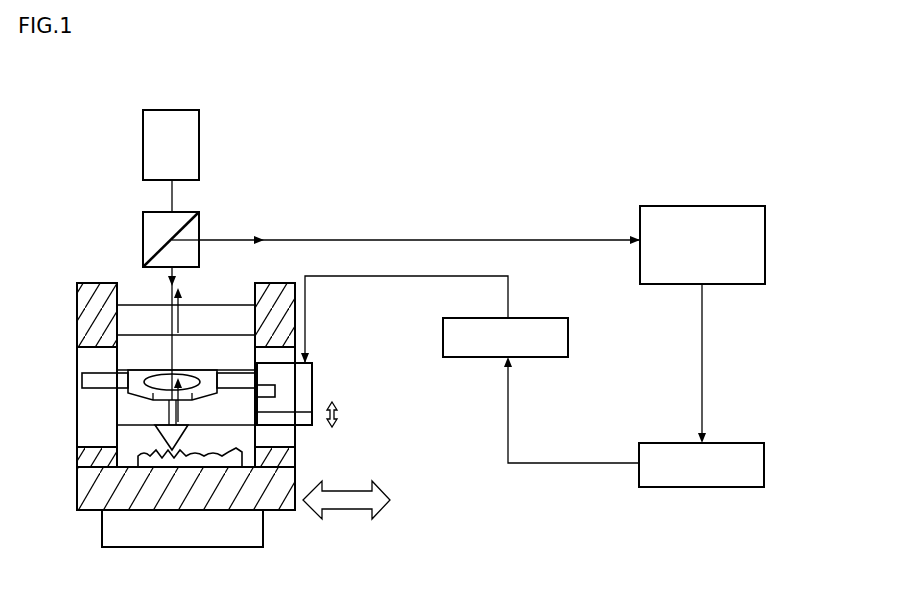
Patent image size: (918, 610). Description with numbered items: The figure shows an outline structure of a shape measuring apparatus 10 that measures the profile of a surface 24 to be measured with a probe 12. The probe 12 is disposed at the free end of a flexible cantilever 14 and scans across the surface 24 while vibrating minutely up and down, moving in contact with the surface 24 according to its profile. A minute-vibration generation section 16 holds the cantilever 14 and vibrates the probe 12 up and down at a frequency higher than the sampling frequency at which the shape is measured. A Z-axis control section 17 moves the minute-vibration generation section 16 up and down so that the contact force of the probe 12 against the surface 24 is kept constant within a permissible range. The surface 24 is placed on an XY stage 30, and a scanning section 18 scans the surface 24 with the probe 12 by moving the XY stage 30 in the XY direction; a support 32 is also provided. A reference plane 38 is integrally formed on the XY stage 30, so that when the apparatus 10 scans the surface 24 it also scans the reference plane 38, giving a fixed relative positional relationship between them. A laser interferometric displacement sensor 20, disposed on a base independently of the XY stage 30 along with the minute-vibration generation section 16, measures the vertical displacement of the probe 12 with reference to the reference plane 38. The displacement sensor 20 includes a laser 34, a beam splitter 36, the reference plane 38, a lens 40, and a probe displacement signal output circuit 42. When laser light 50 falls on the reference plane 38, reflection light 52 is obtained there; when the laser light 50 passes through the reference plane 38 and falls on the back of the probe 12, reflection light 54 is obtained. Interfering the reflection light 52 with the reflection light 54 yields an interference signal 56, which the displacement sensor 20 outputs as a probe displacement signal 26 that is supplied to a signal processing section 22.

The shape measuring apparatus 10 is at (566, 124).
The probe 12 is at (158, 434).
The flexible cantilever 14 is at (167, 425).
The minute-vibration generation section 16 is at (308, 400).
The Z-axis control section 17 is at (538, 319).
The scanning section 18 is at (172, 548).
The displacement sensor 20 is at (249, 191).
The signal processing section 22 is at (736, 444).
The surface to be measured 24 is at (157, 452).
The probe displacement signal 26 is at (702, 353).
The XY stage 30 is at (82, 481).
The support 32 is at (297, 437).
The laser 34 is at (143, 148).
The beam splitter 36 is at (143, 228).
The reference plane 38 is at (133, 323).
The lens 40 is at (152, 372).
The probe displacement signal output circuit 42 is at (734, 207).
The laser light 50 is at (172, 195).
The reflection light 52 is at (178, 333).
The reflection light 54 is at (185, 406).
The interference signal 56 is at (383, 240).